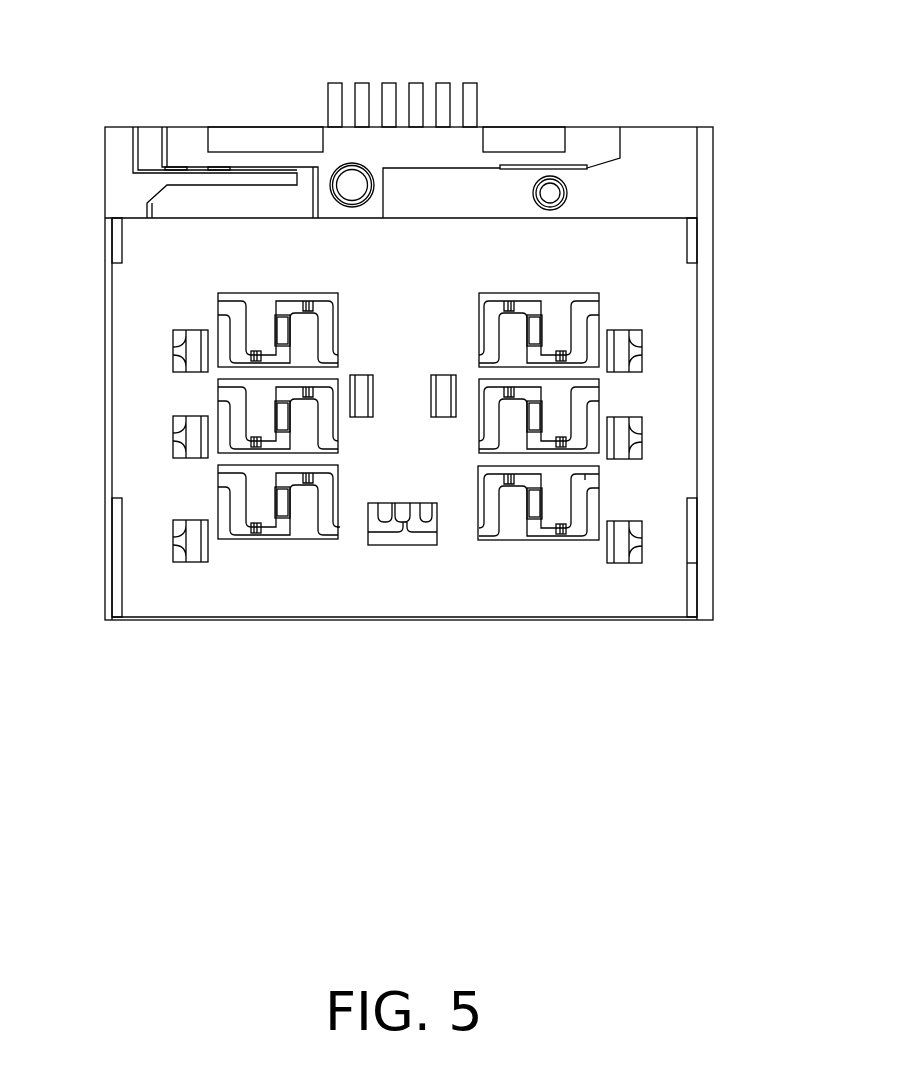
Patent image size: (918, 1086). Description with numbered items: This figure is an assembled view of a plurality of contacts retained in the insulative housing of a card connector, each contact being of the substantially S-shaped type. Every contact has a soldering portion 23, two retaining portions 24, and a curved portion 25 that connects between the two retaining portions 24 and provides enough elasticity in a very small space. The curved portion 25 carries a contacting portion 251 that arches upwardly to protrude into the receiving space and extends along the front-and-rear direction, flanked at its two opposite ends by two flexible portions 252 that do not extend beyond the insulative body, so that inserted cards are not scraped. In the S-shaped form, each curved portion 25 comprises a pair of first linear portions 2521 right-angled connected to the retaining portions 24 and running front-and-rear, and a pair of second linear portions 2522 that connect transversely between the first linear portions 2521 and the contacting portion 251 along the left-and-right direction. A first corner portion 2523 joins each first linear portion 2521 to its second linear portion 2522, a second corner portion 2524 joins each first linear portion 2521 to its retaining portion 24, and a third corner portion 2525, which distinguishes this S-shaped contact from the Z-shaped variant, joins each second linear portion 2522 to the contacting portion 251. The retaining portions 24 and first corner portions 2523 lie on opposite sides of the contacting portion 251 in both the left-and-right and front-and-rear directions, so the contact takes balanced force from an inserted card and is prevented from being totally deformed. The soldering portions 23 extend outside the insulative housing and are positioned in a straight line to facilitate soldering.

The soldering portion 23 is at (333, 107).
The retaining portion 24 is at (225, 479).
The curved portion 25 is at (437, 767).
The contacting portion 251 is at (282, 505).
The flexible portion 252 is at (273, 705).
The first linear portion 2521 is at (233, 492).
The second linear portion 2522 is at (257, 532).
The first corner portion 2523 is at (237, 528).
The second corner portion 2524 is at (337, 527).
The third corner portion 2525 is at (538, 527).